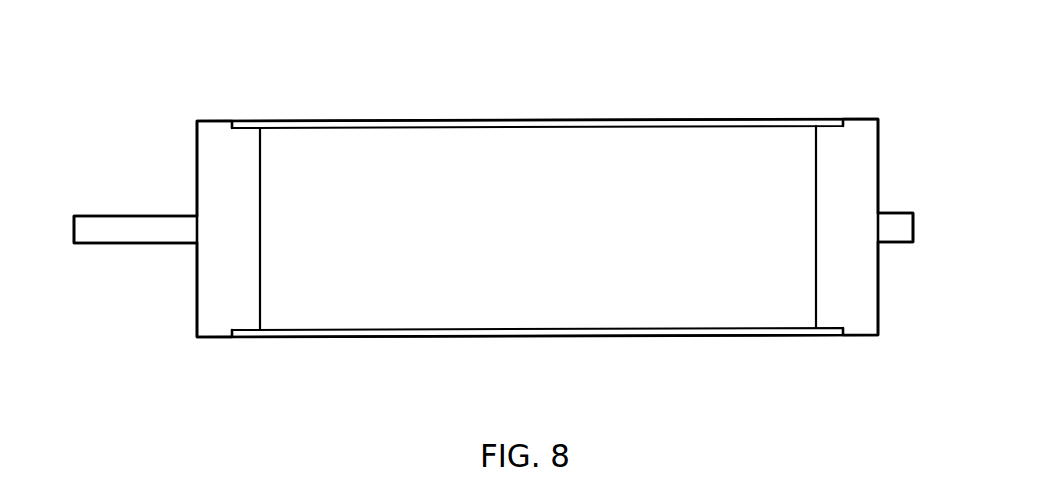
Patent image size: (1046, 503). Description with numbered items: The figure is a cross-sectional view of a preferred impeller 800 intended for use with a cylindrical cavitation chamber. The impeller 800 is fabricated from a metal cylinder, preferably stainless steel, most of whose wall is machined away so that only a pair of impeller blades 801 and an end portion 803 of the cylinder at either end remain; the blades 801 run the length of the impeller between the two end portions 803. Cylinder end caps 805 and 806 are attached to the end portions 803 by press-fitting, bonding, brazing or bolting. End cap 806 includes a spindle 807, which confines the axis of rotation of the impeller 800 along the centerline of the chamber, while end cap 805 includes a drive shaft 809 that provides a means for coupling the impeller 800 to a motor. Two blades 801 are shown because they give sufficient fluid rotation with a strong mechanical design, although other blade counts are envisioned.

The impeller 800 is at (791, 87).
The impeller blades 801 is at (588, 123).
The end portion of the cylinder 803 is at (246, 352).
The cylinder end cap 805 is at (210, 155).
The cylinder end cap 806 is at (863, 159).
The spindle 807 is at (898, 223).
The drive shaft 809 is at (137, 232).